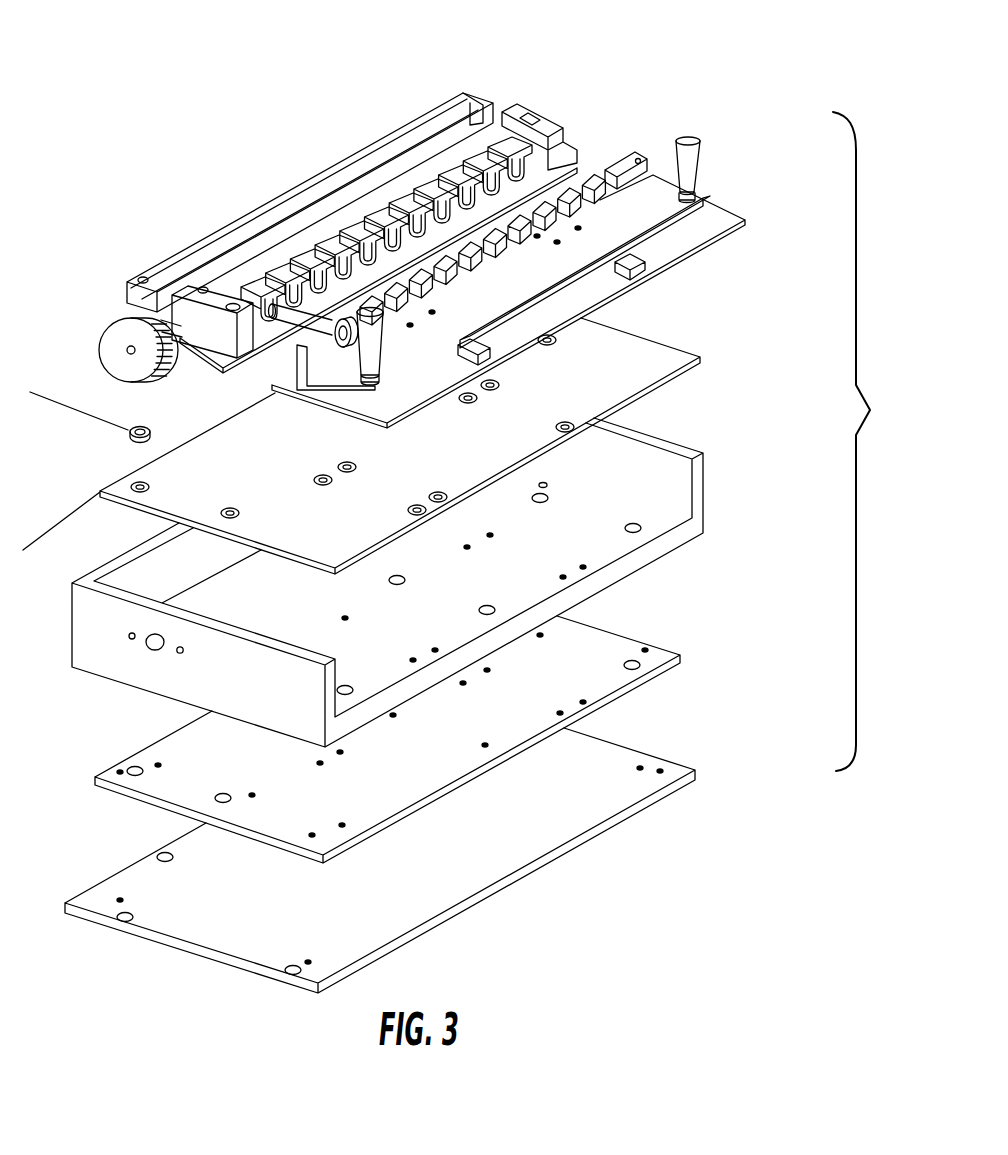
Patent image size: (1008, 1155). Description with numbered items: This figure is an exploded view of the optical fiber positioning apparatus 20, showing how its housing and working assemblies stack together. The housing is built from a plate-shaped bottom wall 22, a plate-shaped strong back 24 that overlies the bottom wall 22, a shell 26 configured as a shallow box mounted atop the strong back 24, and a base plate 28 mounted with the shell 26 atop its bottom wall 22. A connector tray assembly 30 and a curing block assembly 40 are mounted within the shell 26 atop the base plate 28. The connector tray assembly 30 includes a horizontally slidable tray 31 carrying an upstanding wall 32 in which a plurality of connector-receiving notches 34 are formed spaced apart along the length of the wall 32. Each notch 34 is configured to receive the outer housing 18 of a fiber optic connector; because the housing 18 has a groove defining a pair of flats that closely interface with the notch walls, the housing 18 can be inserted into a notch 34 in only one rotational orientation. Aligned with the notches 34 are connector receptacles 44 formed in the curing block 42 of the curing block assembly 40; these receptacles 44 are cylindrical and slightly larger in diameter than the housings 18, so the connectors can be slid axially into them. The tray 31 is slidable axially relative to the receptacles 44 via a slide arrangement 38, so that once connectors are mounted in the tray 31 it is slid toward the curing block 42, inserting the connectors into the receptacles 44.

The outer housing 18 is at (310, 323).
The optical fiber positioning apparatus 20 is at (867, 441).
The bottom wall 22 is at (470, 903).
The strong back 24 is at (660, 642).
The shell 26 is at (690, 526).
The base plate 28 is at (660, 359).
The connector tray assembly 30 is at (653, 170).
The tray 31 is at (650, 236).
The upstanding wall 32 is at (614, 168).
The notches 34 is at (462, 260).
The slide arrangement 38 is at (452, 356).
The curing block assembly 40 is at (148, 266).
The curing block 42 is at (540, 126).
The connector receptacles 44 is at (386, 198).